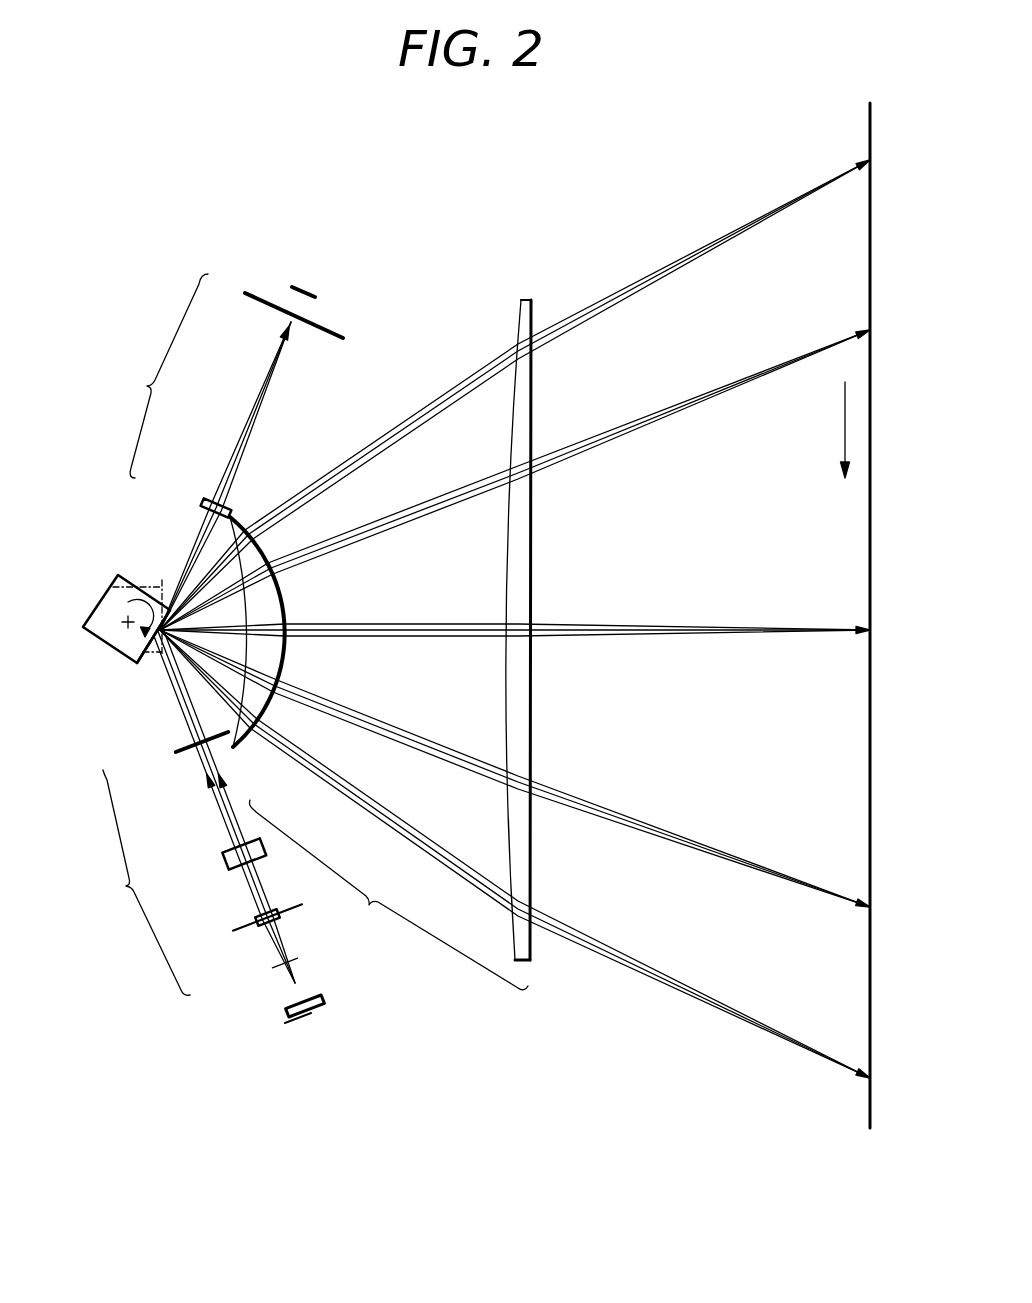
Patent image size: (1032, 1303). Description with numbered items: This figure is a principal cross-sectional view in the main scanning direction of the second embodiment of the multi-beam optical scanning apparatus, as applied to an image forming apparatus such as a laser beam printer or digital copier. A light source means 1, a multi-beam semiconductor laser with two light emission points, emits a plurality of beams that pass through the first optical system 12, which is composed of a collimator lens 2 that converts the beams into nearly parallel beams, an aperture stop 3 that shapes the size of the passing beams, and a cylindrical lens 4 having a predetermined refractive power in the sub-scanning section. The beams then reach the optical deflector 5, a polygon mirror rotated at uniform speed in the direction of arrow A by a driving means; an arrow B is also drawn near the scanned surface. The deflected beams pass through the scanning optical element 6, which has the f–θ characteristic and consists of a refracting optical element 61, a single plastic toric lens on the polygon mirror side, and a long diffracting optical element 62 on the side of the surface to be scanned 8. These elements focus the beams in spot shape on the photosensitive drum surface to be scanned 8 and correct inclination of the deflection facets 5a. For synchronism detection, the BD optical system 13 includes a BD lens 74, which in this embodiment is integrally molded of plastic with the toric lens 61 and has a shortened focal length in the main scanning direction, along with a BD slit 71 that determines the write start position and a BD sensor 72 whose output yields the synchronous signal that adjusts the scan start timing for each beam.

The light source means 1 is at (294, 1022).
The collimator lens 2 is at (245, 921).
The aperture stop 3 is at (178, 753).
The cylindrical lens 4 is at (226, 857).
The optical deflector 5 is at (103, 648).
The deflection facets 5a is at (141, 666).
The scanning optical element 6 is at (388, 895).
The surface to be scanned 8 is at (872, 122).
The first optical system 12 is at (143, 882).
The BD optical system 13 is at (164, 376).
The refracting optical element 61 is at (240, 748).
The long diffracting optical element 62 is at (516, 962).
The BD slit 71 is at (305, 338).
The BD sensor 72 is at (318, 295).
The BD lens 74 is at (208, 498).
The rotation direction arrow A is at (150, 588).
The scanning direction B is at (845, 425).